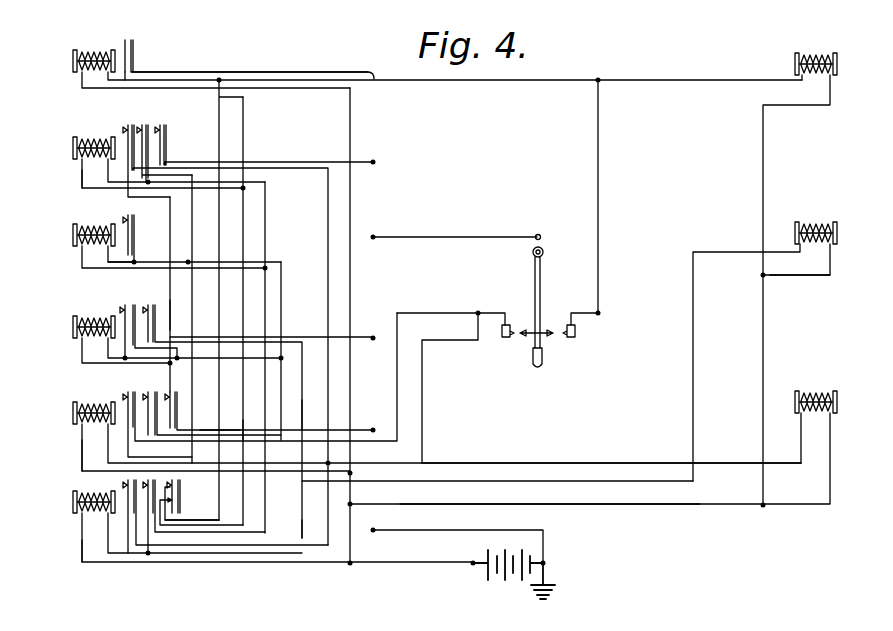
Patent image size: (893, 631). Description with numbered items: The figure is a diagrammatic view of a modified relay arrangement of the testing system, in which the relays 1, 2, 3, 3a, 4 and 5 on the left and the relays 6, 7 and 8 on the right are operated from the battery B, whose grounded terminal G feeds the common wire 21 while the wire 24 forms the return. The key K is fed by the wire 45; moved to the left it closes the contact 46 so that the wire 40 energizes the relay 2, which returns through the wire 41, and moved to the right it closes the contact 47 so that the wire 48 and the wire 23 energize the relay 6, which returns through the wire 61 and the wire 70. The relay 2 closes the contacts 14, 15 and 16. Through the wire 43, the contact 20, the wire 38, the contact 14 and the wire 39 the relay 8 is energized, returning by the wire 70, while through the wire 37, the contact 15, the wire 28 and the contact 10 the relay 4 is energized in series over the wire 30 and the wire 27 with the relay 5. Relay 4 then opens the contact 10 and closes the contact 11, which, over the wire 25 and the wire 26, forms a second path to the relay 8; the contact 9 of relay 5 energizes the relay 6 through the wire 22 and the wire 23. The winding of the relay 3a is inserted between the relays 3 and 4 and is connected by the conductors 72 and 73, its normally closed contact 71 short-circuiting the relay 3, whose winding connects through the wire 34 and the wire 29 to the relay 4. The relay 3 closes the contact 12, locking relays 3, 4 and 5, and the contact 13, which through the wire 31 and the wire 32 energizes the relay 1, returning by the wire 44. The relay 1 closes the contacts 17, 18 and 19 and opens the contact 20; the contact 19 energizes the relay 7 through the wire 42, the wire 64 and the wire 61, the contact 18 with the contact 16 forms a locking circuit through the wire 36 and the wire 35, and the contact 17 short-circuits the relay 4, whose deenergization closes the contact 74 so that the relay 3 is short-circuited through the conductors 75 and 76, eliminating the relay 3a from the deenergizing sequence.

The relay 1 is at (88, 494).
The relay 2 is at (86, 404).
The relay 3 is at (86, 316).
The relay 3a is at (177, 233).
The relay 4 is at (95, 136).
The relay 5 is at (96, 55).
The relay 6 is at (804, 56).
The relay 7 is at (804, 224).
The relay 8 is at (804, 394).
The contact 9 is at (127, 40).
The contact 10 is at (147, 126).
The contact 11 is at (163, 126).
The contact 12 is at (130, 298).
The contact 13 is at (153, 306).
The contact 14 is at (129, 393).
The contact 15 is at (155, 393).
The contact 16 is at (173, 394).
The contact 17 is at (128, 488).
The contact 18 is at (150, 488).
The contact 19 is at (182, 487).
The contact 20 is at (182, 500).
The wire 21 is at (240, 71).
The wire 22 is at (219, 140).
The wire 23 is at (410, 82).
The wire 24 is at (350, 108).
The wire 25 is at (283, 163).
The wire 26 is at (314, 170).
The wire 27 is at (243, 136).
The wire 28 is at (282, 305).
The wire 29 is at (266, 230).
The wire 30 is at (82, 180).
The wire 31 is at (308, 340).
The wire 32 is at (300, 412).
The wire 34 is at (172, 224).
The wire 35 is at (196, 428).
The wire 36 is at (246, 428).
The wire 37 is at (426, 313).
The wire 38 is at (186, 522).
The wire 39 is at (476, 462).
The wire 40 is at (422, 394).
The wire 41 is at (82, 446).
The wire 42 is at (508, 481).
The wire 43 is at (306, 530).
The wire 44 is at (82, 544).
The wire 45 is at (446, 239).
The contact 46 is at (505, 340).
The contact 47 is at (568, 340).
The wire 48 is at (600, 178).
The wire 61 is at (763, 162).
The wire 64 is at (782, 277).
The wire 70 is at (538, 504).
The contact 71 is at (135, 222).
The conductor 72 is at (102, 270).
The conductor 73 is at (110, 259).
The contact 74 is at (129, 126).
The conductor 75 is at (180, 290).
The conductor 76 is at (172, 317).
The key K is at (544, 288).
The battery B is at (458, 568).
The ground G is at (553, 585).